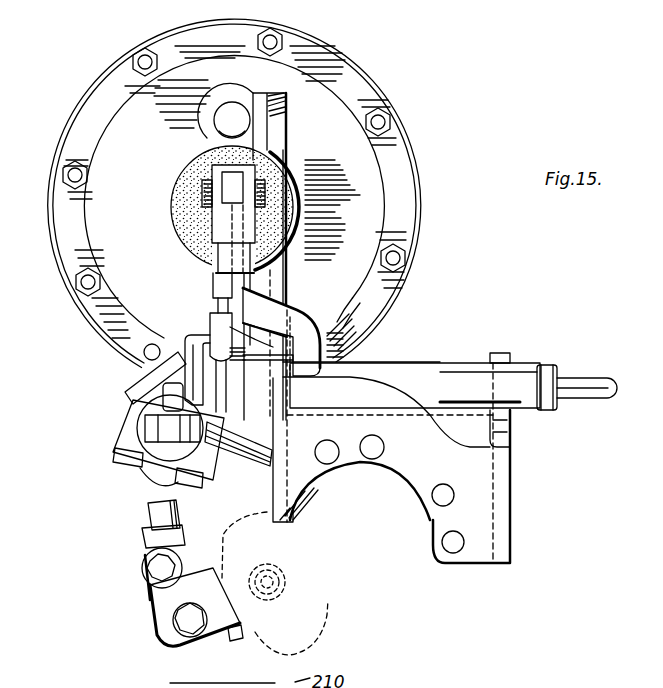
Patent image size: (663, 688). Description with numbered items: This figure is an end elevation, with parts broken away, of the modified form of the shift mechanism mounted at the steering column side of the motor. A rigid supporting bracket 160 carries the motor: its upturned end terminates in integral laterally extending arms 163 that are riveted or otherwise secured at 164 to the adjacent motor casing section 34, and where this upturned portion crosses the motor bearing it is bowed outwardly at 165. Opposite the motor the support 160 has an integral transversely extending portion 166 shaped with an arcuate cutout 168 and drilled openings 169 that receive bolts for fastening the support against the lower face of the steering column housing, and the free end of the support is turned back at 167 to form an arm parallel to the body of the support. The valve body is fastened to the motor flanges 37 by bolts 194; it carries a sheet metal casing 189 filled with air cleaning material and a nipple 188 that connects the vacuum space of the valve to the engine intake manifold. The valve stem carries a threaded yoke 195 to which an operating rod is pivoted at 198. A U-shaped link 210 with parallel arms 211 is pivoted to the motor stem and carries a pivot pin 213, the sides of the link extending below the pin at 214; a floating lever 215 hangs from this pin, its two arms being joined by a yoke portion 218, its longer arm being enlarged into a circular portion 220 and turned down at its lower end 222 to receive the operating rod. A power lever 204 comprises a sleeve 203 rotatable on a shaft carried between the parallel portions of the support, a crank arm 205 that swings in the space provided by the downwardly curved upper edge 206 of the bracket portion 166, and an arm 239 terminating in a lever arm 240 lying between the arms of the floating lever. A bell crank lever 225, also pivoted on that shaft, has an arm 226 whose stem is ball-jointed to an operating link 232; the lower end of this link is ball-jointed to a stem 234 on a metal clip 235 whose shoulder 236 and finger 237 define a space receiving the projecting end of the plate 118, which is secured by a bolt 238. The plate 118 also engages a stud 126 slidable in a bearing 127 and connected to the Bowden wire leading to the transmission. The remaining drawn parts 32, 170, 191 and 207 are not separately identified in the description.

The housing 32 is at (72, 122).
The motor casing section 34 is at (423, 208).
The motor flanges 37 is at (403, 135).
The plate 118 is at (292, 645).
The stud 126 is at (280, 580).
The bearing 127 is at (283, 597).
The supporting bracket 160 is at (524, 502).
The laterally extending arms 163 is at (229, 97).
The riveted connection 164 is at (234, 122).
The outwardly bowed portion 165 is at (313, 200).
The laterally extending bracket portion 166 is at (373, 397).
The turned-back arm 167 is at (507, 424).
The arcuate cutout portion 168 is at (401, 485).
The drilled openings 169 is at (328, 458).
The ring 170 is at (137, 428).
The nipple 188 is at (255, 462).
The sheet metal casing 189 is at (150, 470).
The block face 191 is at (158, 482).
The bolts 194 is at (142, 385).
The yoke 195 is at (158, 414).
The pivotal connection 198 is at (170, 384).
The sleeve 203 is at (450, 357).
The power lever 204 is at (342, 322).
The crank arm 205 is at (517, 365).
The downwardly curved upper edge 206 is at (410, 403).
The pin 207 is at (577, 375).
The link 210 is at (225, 152).
The parallel arms 211 is at (200, 174).
The pivot pin 213 is at (203, 190).
The downwardly extending link portions 214 is at (210, 232).
The floating lever 215 is at (297, 268).
The yoke portion 218 is at (233, 264).
The circular enlarged portion 220 is at (216, 298).
The downwardly extending lower end 222 is at (187, 338).
The bell crank lever 225 is at (272, 422).
The bell crank lever arm 226 is at (233, 408).
The operating link 232 is at (150, 514).
The stem 234 is at (146, 542).
The metal clip 235 is at (163, 603).
The shoulder 236 is at (187, 575).
The finger 237 is at (233, 640).
The bolt 238 is at (168, 632).
The power lever arm 239 is at (300, 314).
The lever arm 240 is at (300, 289).